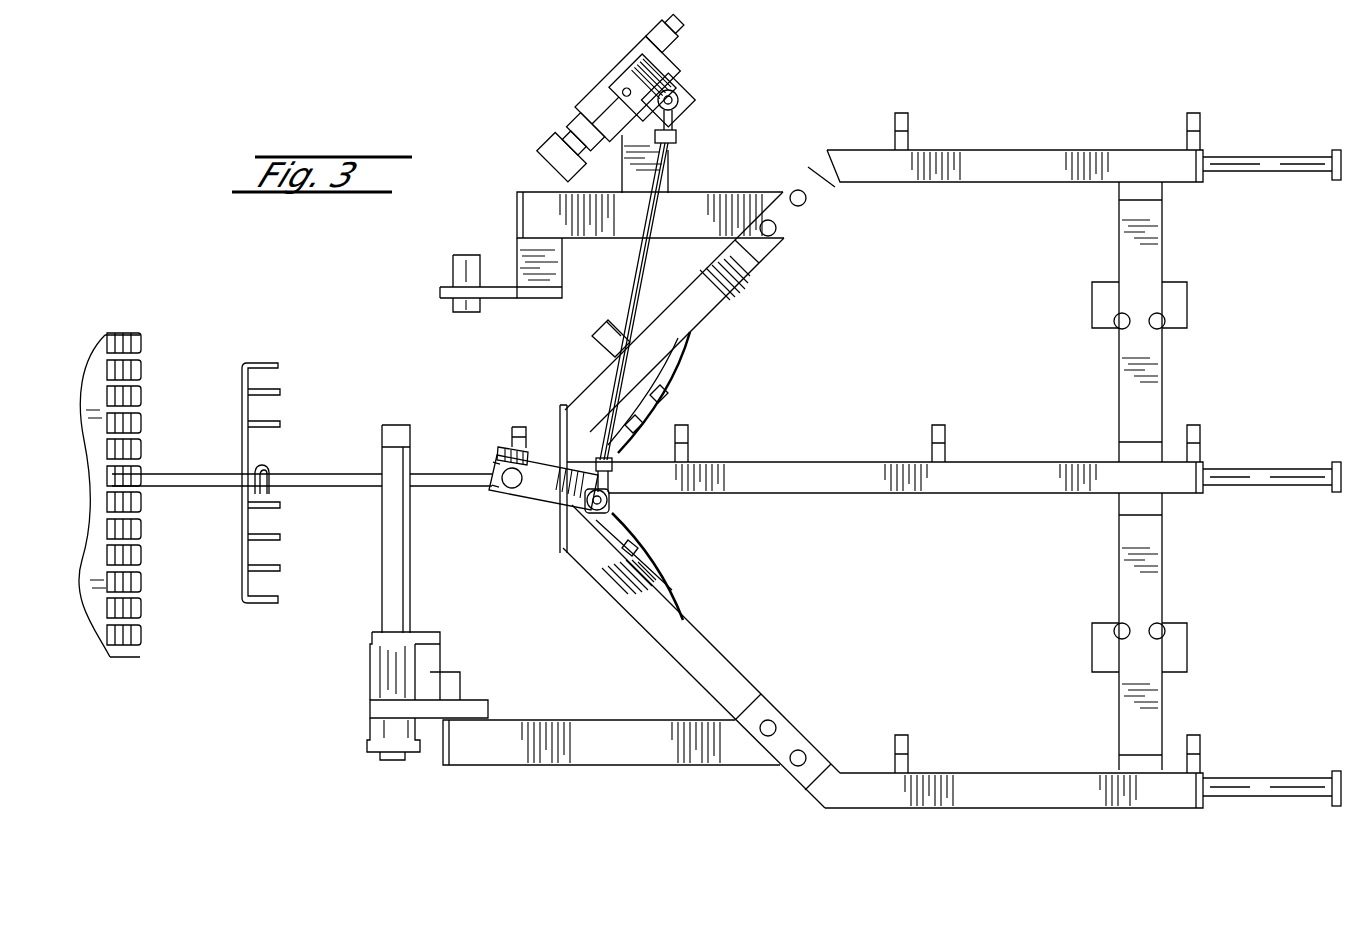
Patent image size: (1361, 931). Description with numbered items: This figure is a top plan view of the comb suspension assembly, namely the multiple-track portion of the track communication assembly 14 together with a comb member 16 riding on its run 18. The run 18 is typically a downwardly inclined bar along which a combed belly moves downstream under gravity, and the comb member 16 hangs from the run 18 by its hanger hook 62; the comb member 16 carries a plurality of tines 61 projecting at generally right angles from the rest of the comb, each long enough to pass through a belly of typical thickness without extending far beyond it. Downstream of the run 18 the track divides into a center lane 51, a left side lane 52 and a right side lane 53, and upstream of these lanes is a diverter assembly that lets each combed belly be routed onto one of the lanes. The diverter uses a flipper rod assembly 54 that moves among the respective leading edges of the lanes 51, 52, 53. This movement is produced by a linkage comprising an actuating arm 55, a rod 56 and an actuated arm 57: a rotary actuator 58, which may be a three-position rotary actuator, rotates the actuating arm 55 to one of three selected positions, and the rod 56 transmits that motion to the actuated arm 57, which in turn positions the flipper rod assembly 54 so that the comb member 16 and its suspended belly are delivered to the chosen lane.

The track communication assembly 14 is at (958, 124).
The comb member 16 is at (241, 375).
The run 18 is at (297, 475).
The center lane 51 is at (1256, 470).
The left side lane 52 is at (1265, 160).
The right side lane 53 is at (1280, 796).
The flipper rod assembly 54 is at (503, 452).
The actuating arm 55 is at (673, 73).
The rod 56 is at (630, 292).
The actuated arm 57 is at (545, 492).
The rotary actuator 58 is at (598, 92).
The tines 61 is at (267, 392).
The hanger hook 62 is at (270, 490).